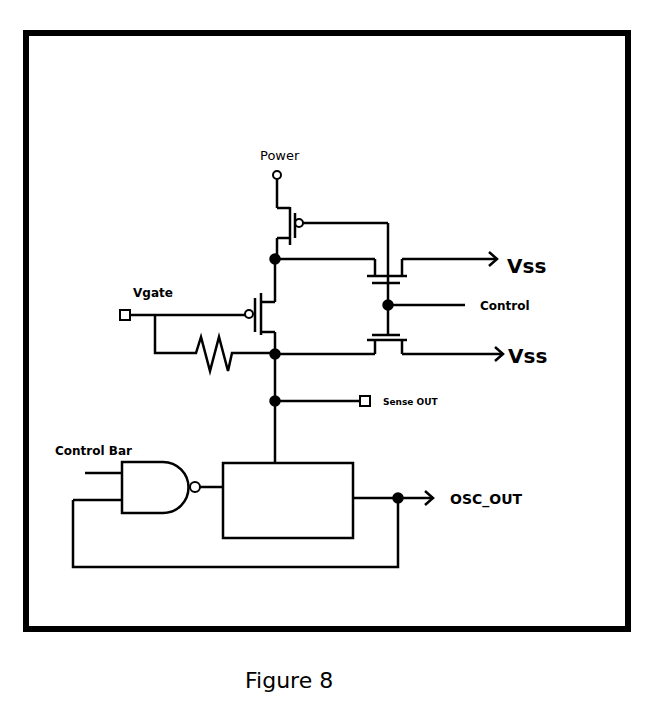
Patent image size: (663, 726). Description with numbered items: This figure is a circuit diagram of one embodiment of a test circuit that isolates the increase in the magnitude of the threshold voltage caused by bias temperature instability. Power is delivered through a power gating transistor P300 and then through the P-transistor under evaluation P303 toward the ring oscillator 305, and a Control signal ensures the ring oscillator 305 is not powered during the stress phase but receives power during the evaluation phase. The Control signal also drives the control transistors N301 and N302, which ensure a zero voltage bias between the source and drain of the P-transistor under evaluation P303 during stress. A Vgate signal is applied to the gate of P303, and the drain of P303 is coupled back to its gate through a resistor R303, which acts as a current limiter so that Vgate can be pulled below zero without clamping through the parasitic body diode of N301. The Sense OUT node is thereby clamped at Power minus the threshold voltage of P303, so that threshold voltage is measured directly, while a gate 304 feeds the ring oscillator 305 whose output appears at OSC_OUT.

The power gating transistor P300 is at (274, 233).
The control transistor N302 is at (379, 256).
The N-type control transistor N301 is at (407, 378).
The P-transistor under evaluation P303 is at (326, 324).
The resistor R303 is at (225, 399).
The NAND gate 304 is at (165, 495).
The ring oscillator 305 is at (287, 520).